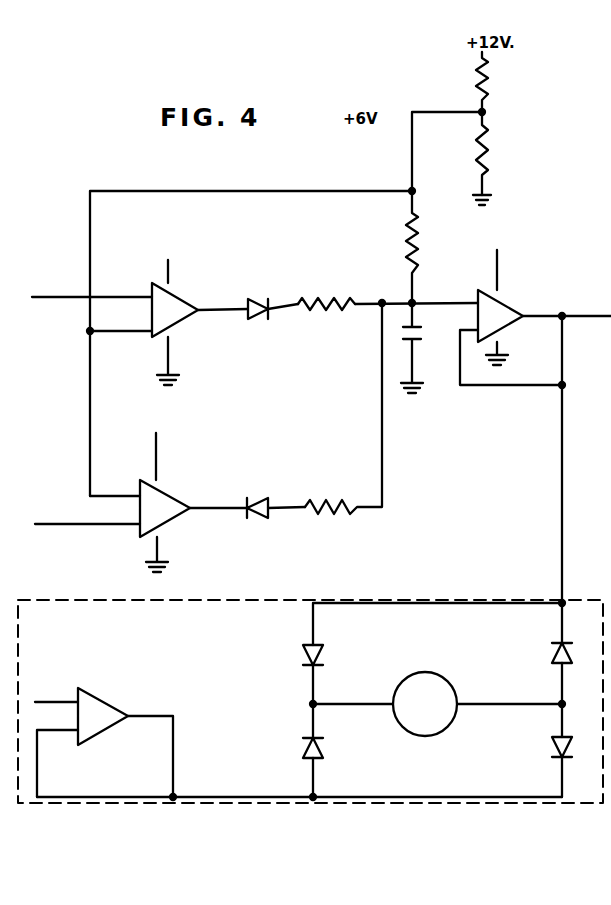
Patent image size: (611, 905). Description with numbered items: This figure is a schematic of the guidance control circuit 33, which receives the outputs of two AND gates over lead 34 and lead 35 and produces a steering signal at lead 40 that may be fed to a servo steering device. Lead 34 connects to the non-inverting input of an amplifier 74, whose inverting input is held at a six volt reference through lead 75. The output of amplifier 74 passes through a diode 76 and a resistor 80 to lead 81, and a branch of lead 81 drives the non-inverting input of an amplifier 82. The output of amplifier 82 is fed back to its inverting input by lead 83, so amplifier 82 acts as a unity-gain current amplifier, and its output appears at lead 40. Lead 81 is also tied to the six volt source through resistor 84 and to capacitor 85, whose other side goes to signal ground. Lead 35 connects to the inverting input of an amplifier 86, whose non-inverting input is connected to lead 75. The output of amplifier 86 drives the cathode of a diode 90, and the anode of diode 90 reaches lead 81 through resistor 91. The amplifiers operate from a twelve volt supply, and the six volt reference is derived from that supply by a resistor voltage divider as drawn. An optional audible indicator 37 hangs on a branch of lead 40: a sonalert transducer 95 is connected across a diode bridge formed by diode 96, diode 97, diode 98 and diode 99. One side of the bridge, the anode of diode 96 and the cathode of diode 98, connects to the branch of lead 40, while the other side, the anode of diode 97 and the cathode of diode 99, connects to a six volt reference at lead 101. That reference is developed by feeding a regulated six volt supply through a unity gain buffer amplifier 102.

The guidance control circuit 33 is at (311, 532).
The lead 34 is at (41, 296).
The lead 35 is at (60, 523).
The audible indicator 37 is at (439, 587).
The lead 40 is at (587, 313).
The amplifier 74 is at (173, 301).
The lead 75 is at (178, 190).
The diode 76 is at (251, 296).
The resistor 80 is at (314, 297).
The lead 81 is at (436, 300).
The amplifier 82 is at (502, 304).
The lead 83 is at (525, 388).
The resistor 84 is at (421, 242).
The capacitor 85 is at (420, 340).
The amplifier 86 is at (167, 500).
The diode 90 is at (258, 496).
The resistor 91 is at (318, 500).
The sonalert transducer 95 is at (428, 683).
The diode 96 is at (300, 652).
The diode 97 is at (303, 752).
The diode 98 is at (555, 655).
The diode 99 is at (552, 748).
The lead 101 is at (270, 795).
The unity gain buffer amplifier 102 is at (104, 708).